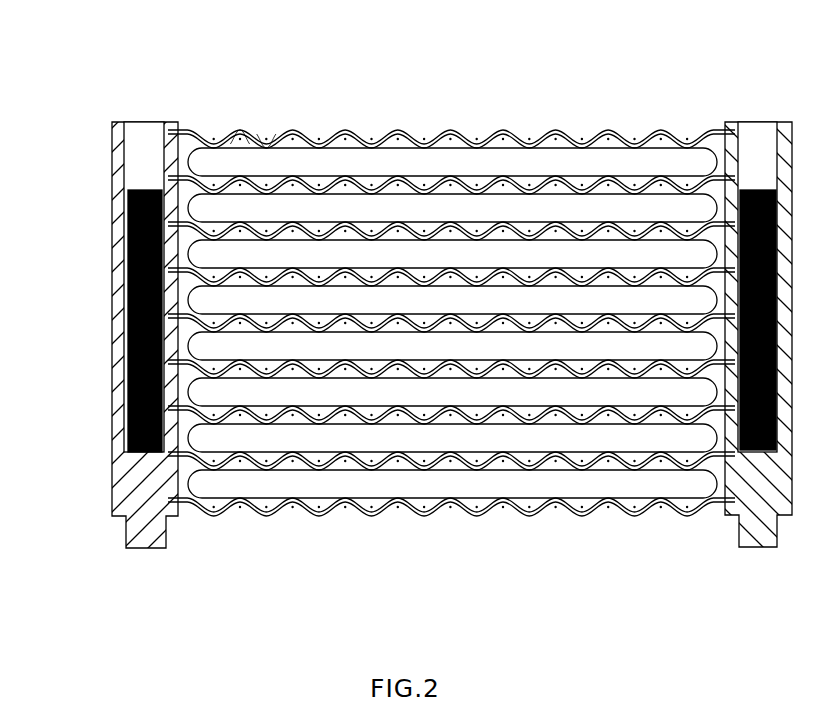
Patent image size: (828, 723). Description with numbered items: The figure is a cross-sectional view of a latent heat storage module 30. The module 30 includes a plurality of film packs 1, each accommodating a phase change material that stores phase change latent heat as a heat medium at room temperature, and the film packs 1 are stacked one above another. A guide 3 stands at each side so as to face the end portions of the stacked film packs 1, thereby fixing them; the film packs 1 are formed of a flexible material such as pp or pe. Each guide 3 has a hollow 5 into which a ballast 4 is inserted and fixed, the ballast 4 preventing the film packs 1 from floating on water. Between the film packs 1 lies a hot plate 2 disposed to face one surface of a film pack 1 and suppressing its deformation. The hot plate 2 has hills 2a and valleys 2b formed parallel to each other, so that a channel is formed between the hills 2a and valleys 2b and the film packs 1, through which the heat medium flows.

The film pack 1 is at (474, 160).
The hot plate 2 is at (451, 264).
The hill 2a is at (241, 128).
The valley 2b is at (268, 140).
The guide 3 is at (114, 299).
The ballast 4 is at (128, 295).
The hollow 5 is at (145, 132).
The latent heat storage module 30 is at (402, 280).